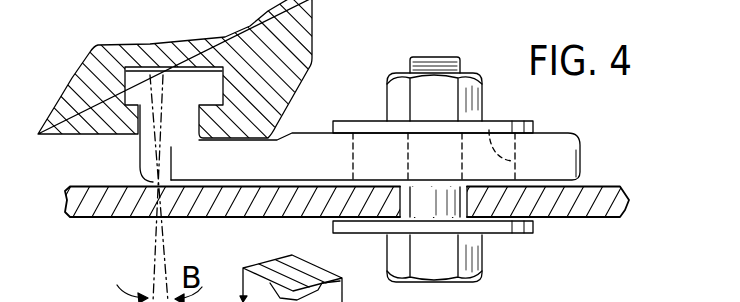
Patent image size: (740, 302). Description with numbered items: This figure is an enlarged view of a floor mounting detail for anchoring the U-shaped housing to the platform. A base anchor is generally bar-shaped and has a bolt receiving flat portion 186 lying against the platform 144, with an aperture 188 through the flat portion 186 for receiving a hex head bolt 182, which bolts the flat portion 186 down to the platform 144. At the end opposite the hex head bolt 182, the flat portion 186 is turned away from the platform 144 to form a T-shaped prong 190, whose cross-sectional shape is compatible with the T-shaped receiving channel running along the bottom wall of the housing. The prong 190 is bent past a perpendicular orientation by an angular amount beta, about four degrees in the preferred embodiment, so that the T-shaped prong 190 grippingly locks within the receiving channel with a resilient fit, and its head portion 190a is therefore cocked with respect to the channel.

The base plate 144 is at (610, 220).
The hex head bolt 182 is at (478, 78).
The bolt receiving flat portion 186 is at (578, 155).
The aperture 188 is at (489, 127).
The T-shaped prong 190 is at (142, 152).
The head portion 190a is at (195, 82).